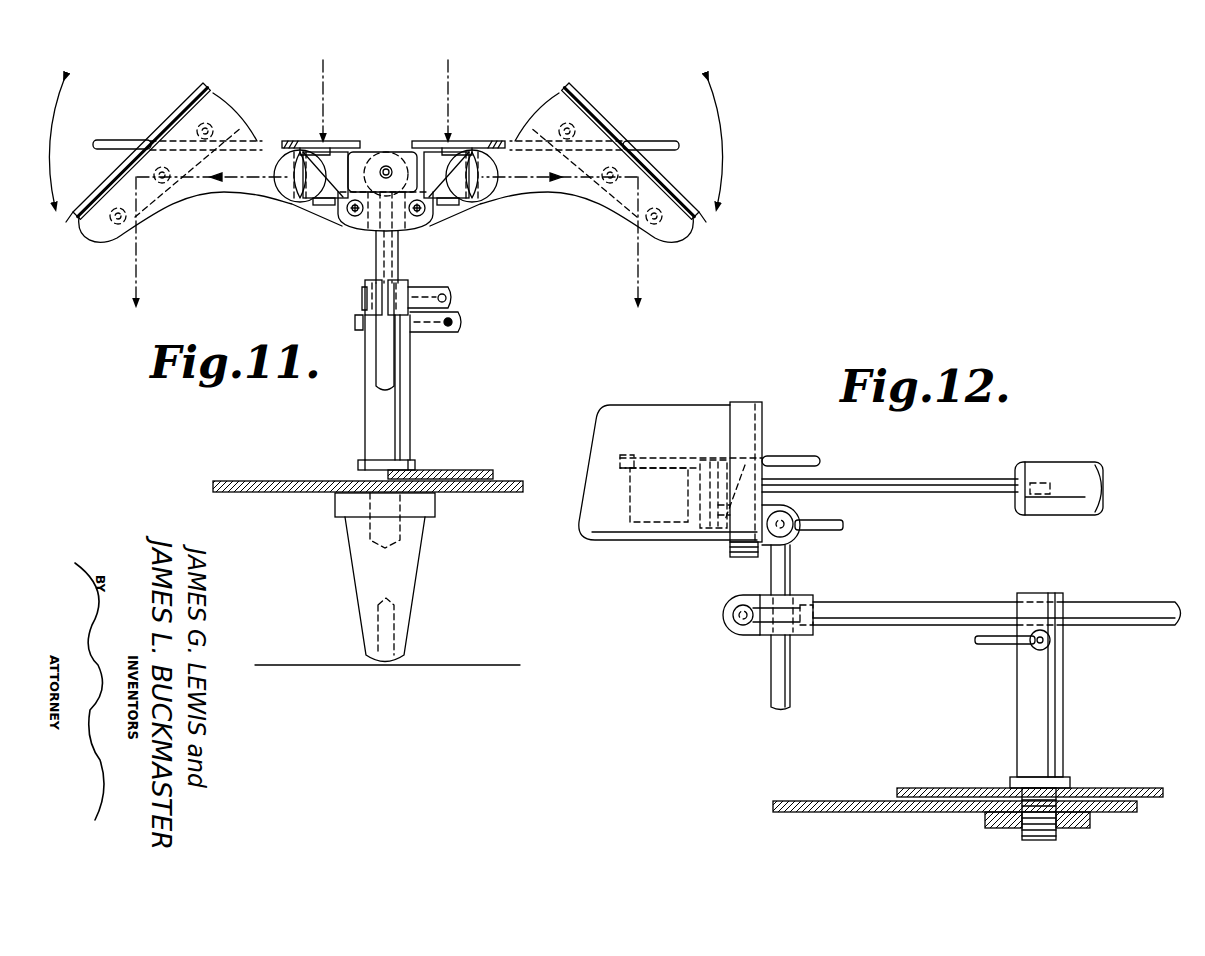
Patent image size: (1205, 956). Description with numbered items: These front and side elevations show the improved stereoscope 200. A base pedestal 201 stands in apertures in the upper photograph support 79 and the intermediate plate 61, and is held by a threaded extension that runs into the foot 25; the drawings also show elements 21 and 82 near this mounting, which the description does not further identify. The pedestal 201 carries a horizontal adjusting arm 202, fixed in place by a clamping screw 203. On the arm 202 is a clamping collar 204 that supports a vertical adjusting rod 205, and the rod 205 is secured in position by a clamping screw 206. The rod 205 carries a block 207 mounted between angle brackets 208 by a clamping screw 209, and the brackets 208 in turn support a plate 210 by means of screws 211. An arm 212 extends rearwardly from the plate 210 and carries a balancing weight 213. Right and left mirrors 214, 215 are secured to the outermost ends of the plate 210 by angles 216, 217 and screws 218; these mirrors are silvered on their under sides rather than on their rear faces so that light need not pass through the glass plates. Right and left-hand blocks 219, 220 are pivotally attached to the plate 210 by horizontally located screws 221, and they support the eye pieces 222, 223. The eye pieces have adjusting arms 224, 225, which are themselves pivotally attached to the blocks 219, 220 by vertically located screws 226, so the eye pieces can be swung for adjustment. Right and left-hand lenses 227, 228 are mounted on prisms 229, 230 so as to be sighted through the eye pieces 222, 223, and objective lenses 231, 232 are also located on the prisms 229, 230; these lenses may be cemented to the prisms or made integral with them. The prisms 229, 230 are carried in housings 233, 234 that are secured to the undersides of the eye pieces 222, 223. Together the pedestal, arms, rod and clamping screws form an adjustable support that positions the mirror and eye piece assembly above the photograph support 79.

In FIG. 11, the work table 21 is at (498, 664).
In FIG. 11, the foot 25 is at (368, 566).
In FIG. 12, the foot 25 is at (985, 822).
In FIG. 11, the intermediate plate 61 is at (240, 480).
In FIG. 12, the intermediate plate 61 is at (836, 800).
In FIG. 11, the upper photograph support 79 is at (460, 470).
In FIG. 12, the upper photograph support 79 is at (960, 786).
In FIG. 11, the nut 82 is at (358, 478).
In FIG. 12, the nut 82 is at (1075, 795).
In FIG. 11, the stereoscope 200 is at (385, 147).
In FIG. 12, the stereoscope 200 is at (835, 394).
In FIG. 11, the base pedestal 201 is at (402, 406).
In FIG. 12, the base pedestal 201 is at (1057, 702).
In FIG. 12, the horizontal adjusting arm 202 is at (918, 601).
In FIG. 11, the clamping screw 203 is at (462, 328).
In FIG. 12, the clamping screw 203 is at (993, 645).
In FIG. 11, the clamping collar 204 is at (364, 290).
In FIG. 12, the clamping collar 204 is at (800, 630).
In FIG. 11, the vertical adjusting rod 205 is at (390, 357).
In FIG. 12, the vertical adjusting rod 205 is at (778, 680).
In FIG. 11, the clamping screw 206 is at (452, 296).
In FIG. 12, the clamping screw 206 is at (730, 616).
In FIG. 11, the block 207 is at (326, 242).
In FIG. 12, the block 207 is at (795, 513).
In FIG. 11, the angle brackets 208 is at (408, 234).
In FIG. 12, the angle brackets 208 is at (792, 542).
In FIG. 12, the clamping screw 209 is at (838, 532).
In FIG. 11, the plate 210 is at (205, 195).
In FIG. 12, the plate 210 is at (738, 550).
In FIG. 11, the screws 211 is at (350, 214).
In FIG. 11, the arm 212 is at (388, 164).
In FIG. 12, the arm 212 is at (940, 484).
In FIG. 12, the balancing weight 213 is at (1055, 465).
In FIG. 11, the right mirror 214 is at (700, 216).
In FIG. 12, the right mirror 214 is at (657, 406).
In FIG. 11, the left mirror 215 is at (86, 224).
In FIG. 11, the angle 216 is at (595, 97).
In FIG. 12, the angle 216 is at (746, 410).
In FIG. 11, the angle 217 is at (185, 97).
In FIG. 11, the screws 218 is at (116, 228).
In FIG. 11, the right-hand block 219 is at (496, 165).
In FIG. 12, the right-hand block 219 is at (690, 550).
In FIG. 11, the left-hand block 220 is at (276, 163).
In FIG. 11, the horizontally located screws 221 is at (275, 180).
In FIG. 12, the horizontally located screws 221 is at (748, 490).
In FIG. 11, the eye piece 222 is at (490, 140).
In FIG. 12, the eye piece 222 is at (627, 458).
In FIG. 11, the eye piece 223 is at (288, 140).
In FIG. 11, the adjusting arm 224 is at (668, 140).
In FIG. 12, the adjusting arm 224 is at (832, 458).
In FIG. 11, the adjusting arm 225 is at (117, 139).
In FIG. 11, the vertically located screws 226 is at (345, 215).
In FIG. 12, the vertically located screws 226 is at (703, 522).
In FIG. 11, the right-hand lens 227 is at (440, 140).
In FIG. 11, the left-hand lens 228 is at (335, 140).
In FIG. 11, the prism 229 is at (468, 140).
In FIG. 12, the prism 229 is at (657, 508).
In FIG. 11, the prism 230 is at (312, 140).
In FIG. 11, the objective lens 231 is at (490, 195).
In FIG. 11, the objective lens 232 is at (290, 196).
In FIG. 11, the housing 233 is at (480, 207).
In FIG. 12, the housing 233 is at (634, 500).
In FIG. 11, the housing 234 is at (292, 210).